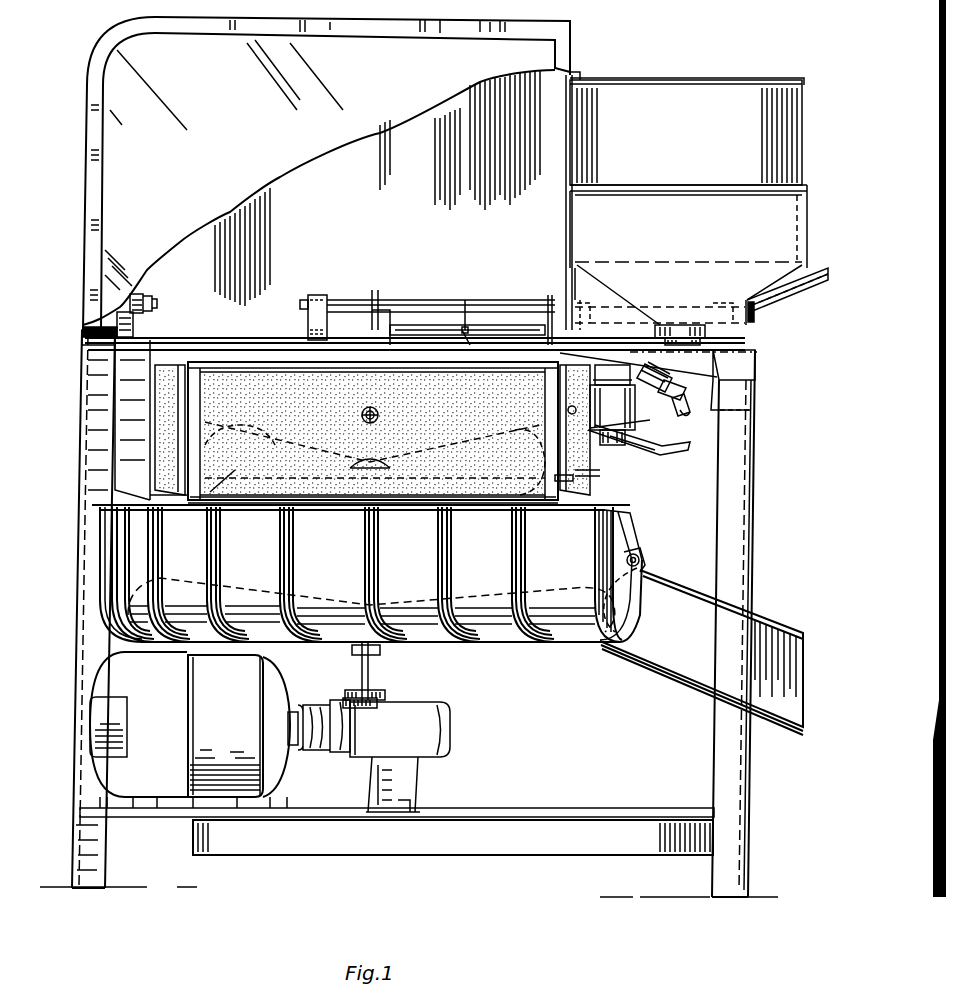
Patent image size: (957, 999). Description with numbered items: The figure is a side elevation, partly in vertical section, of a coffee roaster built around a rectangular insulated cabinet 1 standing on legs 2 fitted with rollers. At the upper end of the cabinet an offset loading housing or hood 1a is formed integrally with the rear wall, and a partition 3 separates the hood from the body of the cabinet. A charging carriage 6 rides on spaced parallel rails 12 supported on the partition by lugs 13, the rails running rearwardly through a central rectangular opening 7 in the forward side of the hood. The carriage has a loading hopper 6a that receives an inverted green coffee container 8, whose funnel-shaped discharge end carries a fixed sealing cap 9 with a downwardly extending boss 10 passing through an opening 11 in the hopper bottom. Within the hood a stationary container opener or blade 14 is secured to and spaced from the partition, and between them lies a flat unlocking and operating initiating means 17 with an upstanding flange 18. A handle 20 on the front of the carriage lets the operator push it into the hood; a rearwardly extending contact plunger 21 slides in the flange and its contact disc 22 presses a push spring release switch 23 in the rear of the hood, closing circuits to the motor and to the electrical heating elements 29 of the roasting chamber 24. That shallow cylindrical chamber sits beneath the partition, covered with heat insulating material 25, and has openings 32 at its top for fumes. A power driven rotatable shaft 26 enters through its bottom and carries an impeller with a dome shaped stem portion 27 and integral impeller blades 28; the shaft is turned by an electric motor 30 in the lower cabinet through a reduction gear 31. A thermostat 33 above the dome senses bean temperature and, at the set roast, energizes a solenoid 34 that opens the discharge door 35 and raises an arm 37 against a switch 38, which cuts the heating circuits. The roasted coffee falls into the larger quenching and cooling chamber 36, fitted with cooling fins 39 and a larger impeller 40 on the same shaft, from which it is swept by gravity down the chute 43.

The cabinet 1 is at (83, 308).
The loading housing or hood 1a is at (545, 22).
The legs 2 is at (75, 865).
The partition 3 is at (215, 352).
The charging carriage 6 is at (812, 237).
The loading hopper 6a is at (676, 185).
The central rectangular opening 7 is at (578, 72).
The green coffee container 8 is at (795, 137).
The sealing cap 9 is at (676, 326).
The boss 10 is at (705, 341).
The opening 11 is at (650, 322).
The rails 12 is at (348, 283).
The lugs 13 is at (308, 315).
The container opener or blade 14 is at (508, 325).
The unlocking and operating initiating means 17 is at (541, 311).
The upstanding flange 18 is at (393, 302).
The handle 20 is at (818, 286).
The contact plunger 21 is at (466, 300).
The contact disc 22 is at (377, 292).
The push spring release switch 23 is at (152, 302).
The roasting chamber 24 is at (350, 387).
The heat insulating material 25 is at (760, 364).
The rotatable shaft 26 is at (370, 562).
The dome shaped stem portion 27 is at (378, 425).
The impeller blades 28 is at (374, 435).
The electrical heating elements 29 is at (232, 497).
The electric motor 30 is at (280, 678).
The reduction gear 31 is at (450, 714).
The openings 32 is at (215, 370).
The thermostat 33 is at (380, 410).
The solenoid 34 is at (662, 448).
The discharge door 35 is at (575, 480).
The quenching and cooling chamber 36 is at (495, 561).
The arm 37 is at (688, 452).
The switch 38 is at (682, 412).
The cooling fins 39 is at (352, 568).
The impeller 40 is at (258, 577).
The chute 43 is at (662, 672).